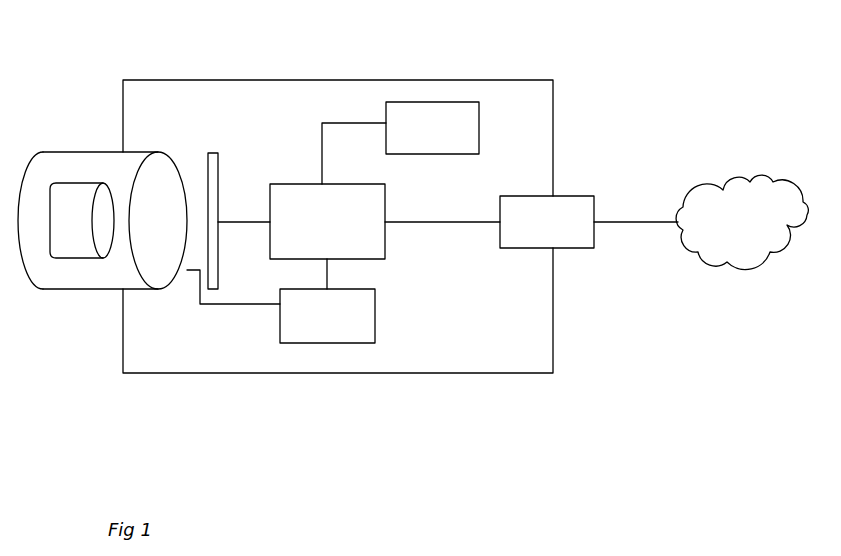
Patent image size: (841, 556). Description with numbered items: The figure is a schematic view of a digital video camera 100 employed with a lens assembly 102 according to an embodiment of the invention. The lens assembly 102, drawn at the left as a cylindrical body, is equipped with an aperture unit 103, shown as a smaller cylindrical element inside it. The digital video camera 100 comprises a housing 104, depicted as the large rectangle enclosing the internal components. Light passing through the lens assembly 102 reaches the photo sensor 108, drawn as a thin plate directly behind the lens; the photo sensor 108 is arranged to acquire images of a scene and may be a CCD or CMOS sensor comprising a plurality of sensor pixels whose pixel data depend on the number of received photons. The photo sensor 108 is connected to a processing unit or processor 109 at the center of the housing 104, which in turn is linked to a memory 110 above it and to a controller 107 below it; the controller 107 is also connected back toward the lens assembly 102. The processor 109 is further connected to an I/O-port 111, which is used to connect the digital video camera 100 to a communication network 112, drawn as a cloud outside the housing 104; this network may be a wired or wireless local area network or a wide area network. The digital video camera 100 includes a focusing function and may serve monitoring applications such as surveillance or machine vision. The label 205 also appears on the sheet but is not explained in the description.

The digital video camera 100 is at (637, 102).
The lens assembly 102 is at (100, 152).
The aperture unit 103 is at (80, 258).
The housing 104 is at (470, 373).
The controller 107 is at (325, 343).
The photo sensor 108 is at (212, 153).
The processing unit 109 is at (373, 259).
The memory 110 is at (417, 101).
The I/O-port 111 is at (573, 248).
The communication network 112 is at (713, 263).
The sheet annotation 205 is at (606, 496).